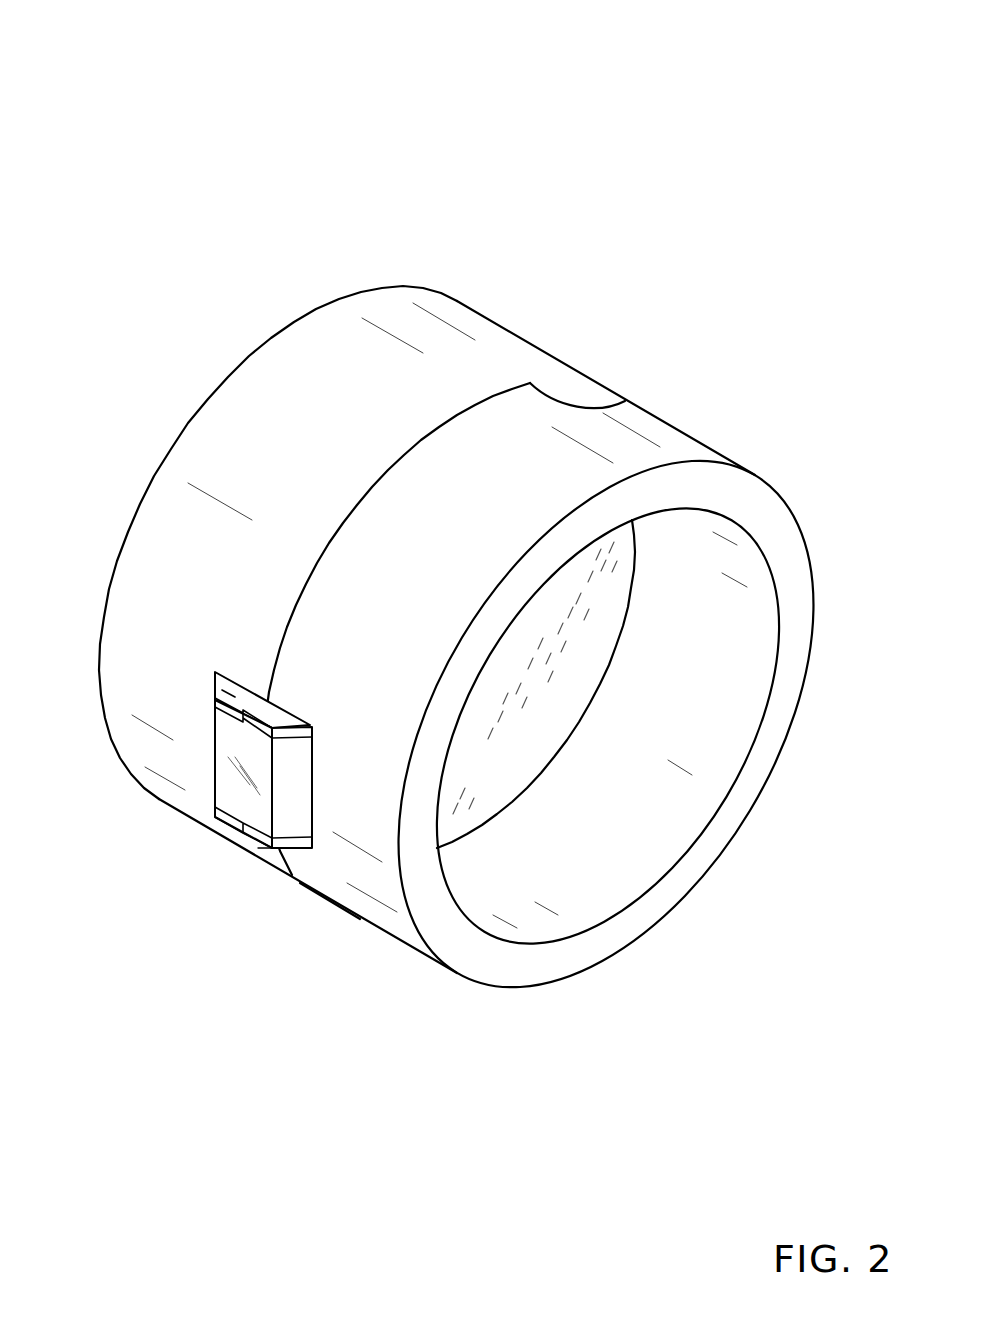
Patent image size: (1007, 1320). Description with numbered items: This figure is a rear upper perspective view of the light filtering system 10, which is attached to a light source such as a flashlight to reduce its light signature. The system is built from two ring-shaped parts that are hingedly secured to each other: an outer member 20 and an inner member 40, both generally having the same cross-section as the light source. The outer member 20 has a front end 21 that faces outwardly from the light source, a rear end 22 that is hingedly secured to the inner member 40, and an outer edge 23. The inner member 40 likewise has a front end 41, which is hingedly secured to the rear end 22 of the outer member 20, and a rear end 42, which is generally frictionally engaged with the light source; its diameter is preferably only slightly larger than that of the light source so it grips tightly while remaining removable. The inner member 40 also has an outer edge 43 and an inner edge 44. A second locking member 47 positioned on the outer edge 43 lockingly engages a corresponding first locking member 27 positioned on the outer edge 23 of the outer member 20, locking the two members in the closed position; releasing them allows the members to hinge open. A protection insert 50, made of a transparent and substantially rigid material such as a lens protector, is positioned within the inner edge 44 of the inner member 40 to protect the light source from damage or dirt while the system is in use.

The light filtering system 10 is at (750, 151).
The outer member 20 is at (497, 324).
The front end 21 is at (250, 348).
The rear end 22 is at (290, 612).
The outer edge 23 is at (194, 415).
The first locking member 27 is at (218, 687).
The inner member 40 is at (690, 438).
The front end 41 is at (615, 396).
The rear end 42 is at (605, 943).
The outer edge 43 is at (338, 858).
The inner edge 44 is at (633, 840).
The second locking member 47 is at (267, 843).
The protection insert 50 is at (597, 643).